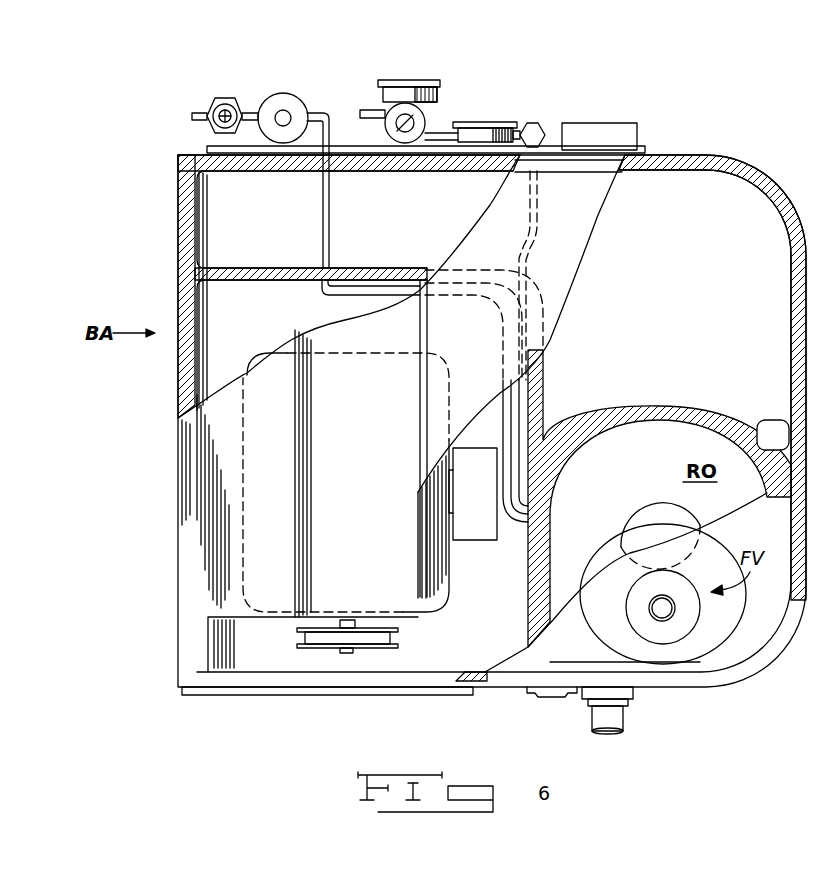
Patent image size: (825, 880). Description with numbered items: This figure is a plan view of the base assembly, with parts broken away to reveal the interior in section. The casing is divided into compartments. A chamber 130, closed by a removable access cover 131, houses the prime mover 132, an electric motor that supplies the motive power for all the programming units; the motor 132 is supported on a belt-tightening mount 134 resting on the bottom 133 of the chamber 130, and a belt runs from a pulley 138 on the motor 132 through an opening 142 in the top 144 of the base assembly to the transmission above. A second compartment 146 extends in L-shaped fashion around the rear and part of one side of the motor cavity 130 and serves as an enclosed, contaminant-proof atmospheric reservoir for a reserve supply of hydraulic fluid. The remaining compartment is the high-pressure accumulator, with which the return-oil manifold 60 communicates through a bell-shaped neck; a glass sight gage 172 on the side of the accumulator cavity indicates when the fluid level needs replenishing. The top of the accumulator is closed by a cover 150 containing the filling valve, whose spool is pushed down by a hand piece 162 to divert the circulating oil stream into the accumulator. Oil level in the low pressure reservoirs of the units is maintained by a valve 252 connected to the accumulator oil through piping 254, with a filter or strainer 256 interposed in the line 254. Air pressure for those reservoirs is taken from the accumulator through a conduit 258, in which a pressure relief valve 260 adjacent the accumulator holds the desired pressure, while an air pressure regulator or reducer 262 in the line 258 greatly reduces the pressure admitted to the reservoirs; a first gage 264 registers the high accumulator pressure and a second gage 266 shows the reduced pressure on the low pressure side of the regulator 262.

The valve 252 is at (226, 97).
The piping 254 is at (246, 113).
The filter or strainer 256 is at (288, 102).
The conduit 258 is at (372, 110).
The second gage 266 is at (408, 87).
The air pressure regulator or reducer 262 is at (425, 124).
The first gage 264 is at (497, 128).
The pressure relief valve 260 is at (545, 128).
The second chamber or compartment 146 is at (699, 284).
The top of the base assembly 144 is at (200, 553).
The belt-tightening mount 134 is at (478, 520).
The prime mover 132 is at (435, 580).
The chamber 130 is at (478, 645).
The opening 142 is at (244, 662).
The pulley 138 is at (370, 642).
The removable access cover 131 is at (352, 695).
The bottom of the chamber 133 is at (468, 674).
The glass sight gage 172 is at (548, 697).
The return oil manifold 60 is at (618, 718).
The cover 150 is at (712, 645).
The hand piece 162 is at (668, 609).